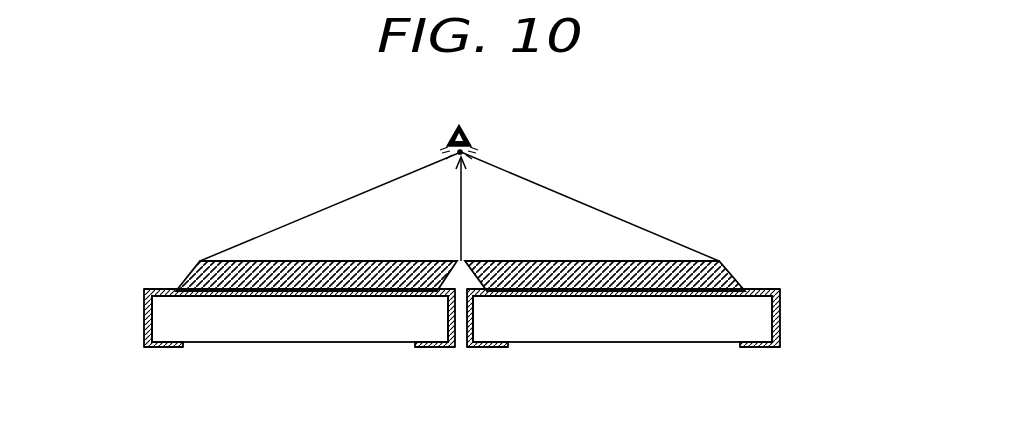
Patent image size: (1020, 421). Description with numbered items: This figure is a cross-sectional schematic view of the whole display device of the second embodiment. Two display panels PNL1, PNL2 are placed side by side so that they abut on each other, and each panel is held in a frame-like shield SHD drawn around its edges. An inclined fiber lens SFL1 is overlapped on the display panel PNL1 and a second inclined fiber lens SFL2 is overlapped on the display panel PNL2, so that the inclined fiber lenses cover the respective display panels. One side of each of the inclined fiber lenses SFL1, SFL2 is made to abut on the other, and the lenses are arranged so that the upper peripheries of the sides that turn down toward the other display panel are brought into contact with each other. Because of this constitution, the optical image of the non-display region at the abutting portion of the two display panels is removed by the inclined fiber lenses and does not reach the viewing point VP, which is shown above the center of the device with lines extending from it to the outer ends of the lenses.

The viewing point VP is at (463, 152).
The inclined fiber lens SFL1 is at (283, 260).
The inclined fiber lens SFL2 is at (637, 260).
The shield SHD is at (144, 313).
The display panel PNL1 is at (268, 328).
The display panel PNL2 is at (613, 330).